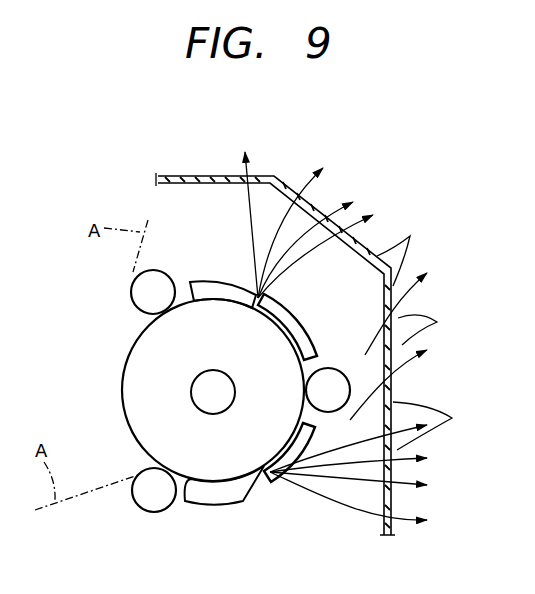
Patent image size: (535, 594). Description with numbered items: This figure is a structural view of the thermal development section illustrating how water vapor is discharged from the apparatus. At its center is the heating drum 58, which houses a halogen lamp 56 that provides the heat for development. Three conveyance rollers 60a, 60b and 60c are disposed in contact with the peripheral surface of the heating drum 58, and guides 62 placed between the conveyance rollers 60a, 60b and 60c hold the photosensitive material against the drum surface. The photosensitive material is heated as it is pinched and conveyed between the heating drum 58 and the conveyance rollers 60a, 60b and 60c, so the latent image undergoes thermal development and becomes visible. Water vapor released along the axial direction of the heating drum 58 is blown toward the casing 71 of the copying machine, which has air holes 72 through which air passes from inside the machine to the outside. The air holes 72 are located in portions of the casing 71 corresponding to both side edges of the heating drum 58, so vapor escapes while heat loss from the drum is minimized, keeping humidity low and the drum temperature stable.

The halogen lamp 56 is at (211, 378).
The heating drum 58 is at (125, 372).
The conveyance roller 60a is at (145, 505).
The conveyance roller 60b is at (329, 380).
The conveyance roller 60c is at (140, 296).
The guide 62 is at (226, 286).
The casing 71 is at (198, 168).
The air hole 72 is at (410, 236).